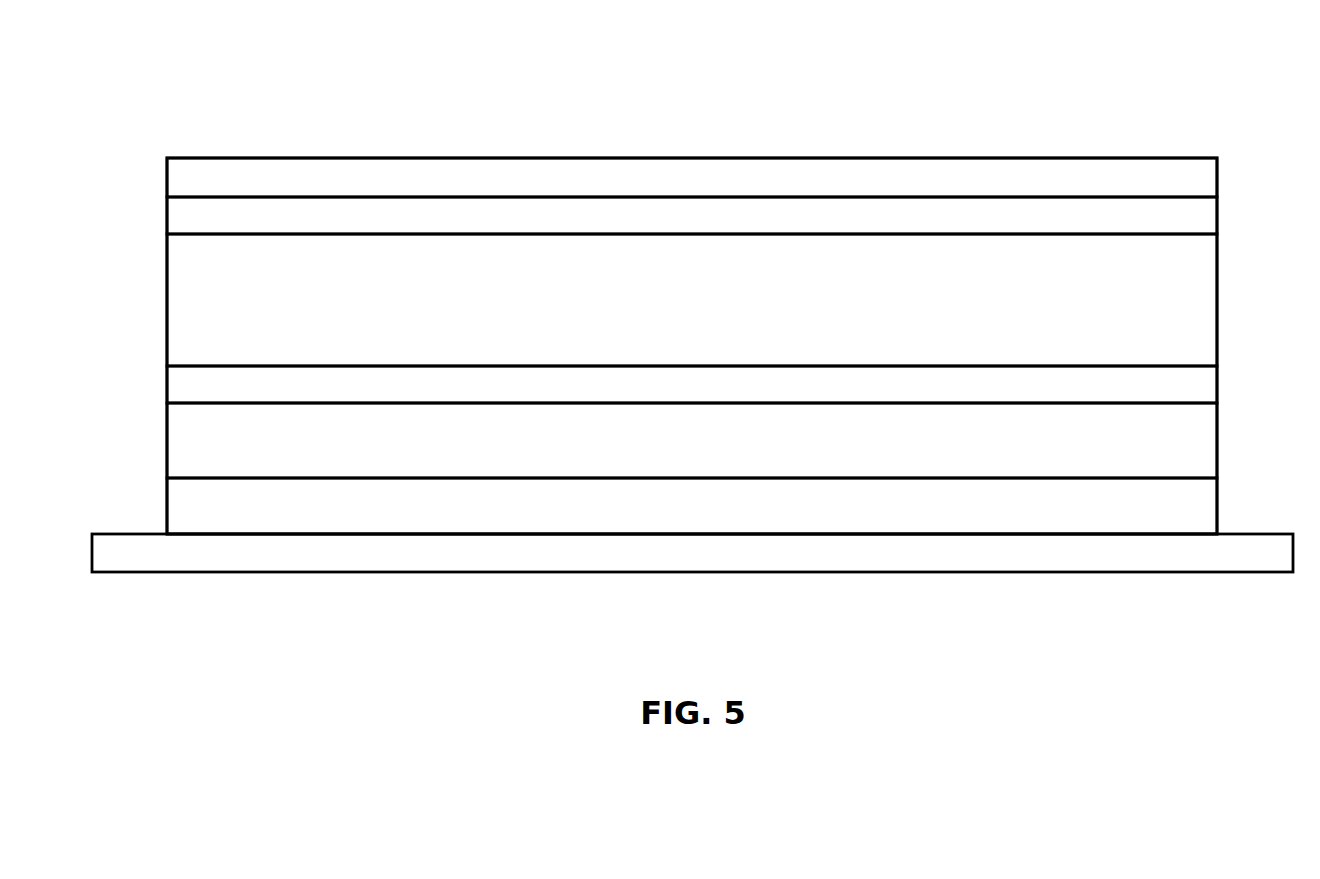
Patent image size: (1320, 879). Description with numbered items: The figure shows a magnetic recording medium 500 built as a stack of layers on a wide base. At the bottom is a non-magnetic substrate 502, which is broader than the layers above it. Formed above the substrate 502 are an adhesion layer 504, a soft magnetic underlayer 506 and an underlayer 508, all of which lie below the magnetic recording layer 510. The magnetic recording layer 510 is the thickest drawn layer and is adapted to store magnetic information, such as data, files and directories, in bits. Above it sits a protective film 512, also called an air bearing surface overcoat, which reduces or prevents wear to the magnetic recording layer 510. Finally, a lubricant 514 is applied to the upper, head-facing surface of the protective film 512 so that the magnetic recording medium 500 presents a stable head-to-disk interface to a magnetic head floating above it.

The magnetic recording medium 500 is at (1073, 120).
The non-magnetic substrate 502 is at (673, 564).
The adhesion layer 504 is at (673, 518).
The soft magnetic underlayer 506 is at (673, 452).
The underlayer 508 is at (673, 396).
The magnetic recording layer 510 is at (673, 310).
The protective film 512 is at (673, 226).
The lubricant 514 is at (673, 190).